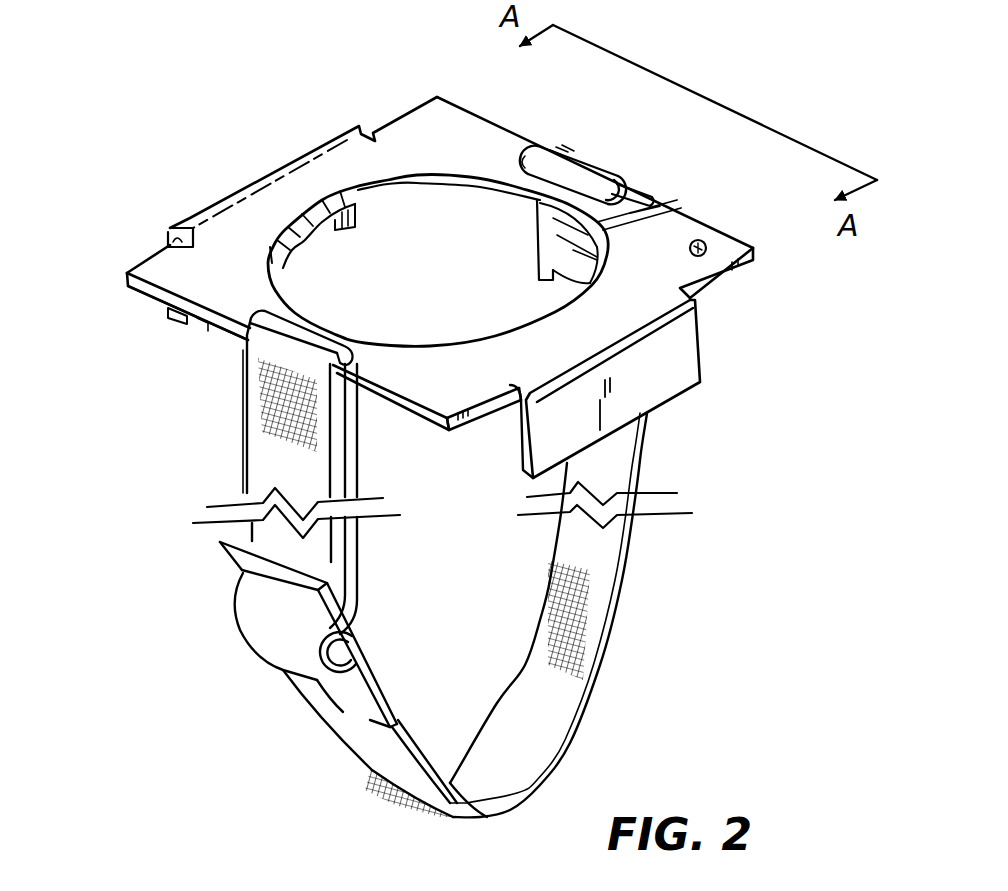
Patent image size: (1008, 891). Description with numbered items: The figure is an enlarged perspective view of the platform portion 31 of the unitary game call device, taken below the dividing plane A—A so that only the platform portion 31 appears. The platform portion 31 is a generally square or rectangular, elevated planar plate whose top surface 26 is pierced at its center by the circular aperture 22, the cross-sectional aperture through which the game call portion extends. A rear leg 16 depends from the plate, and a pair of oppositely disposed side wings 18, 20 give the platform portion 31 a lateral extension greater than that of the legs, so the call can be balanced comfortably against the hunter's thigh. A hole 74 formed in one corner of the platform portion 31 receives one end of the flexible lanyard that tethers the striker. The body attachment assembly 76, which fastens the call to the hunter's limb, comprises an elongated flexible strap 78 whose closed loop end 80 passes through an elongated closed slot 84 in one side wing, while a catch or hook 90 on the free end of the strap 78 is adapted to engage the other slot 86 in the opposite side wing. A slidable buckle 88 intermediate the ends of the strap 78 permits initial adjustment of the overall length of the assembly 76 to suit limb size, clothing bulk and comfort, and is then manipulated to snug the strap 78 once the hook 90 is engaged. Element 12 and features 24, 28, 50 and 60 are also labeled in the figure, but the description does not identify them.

The mounting plate 12 is at (477, 114).
The rear leg 16 is at (683, 364).
The side wing 18 is at (647, 198).
The side wing 20 is at (173, 282).
The aperture 22 is at (438, 261).
The collar band 24 is at (478, 178).
The top surface 26 is at (450, 395).
The side tab 28 is at (203, 322).
The platform portion 31 is at (364, 114).
The band slot 50 is at (285, 262).
The flange lip 60 is at (526, 455).
The hole 74 is at (708, 245).
The body attachment assembly 76 is at (624, 618).
The strap 78 is at (523, 760).
The closed end 80 is at (262, 357).
The slot 84 is at (352, 349).
The slot 86 is at (635, 200).
The buckle 88 is at (300, 681).
The hook 90 is at (600, 172).